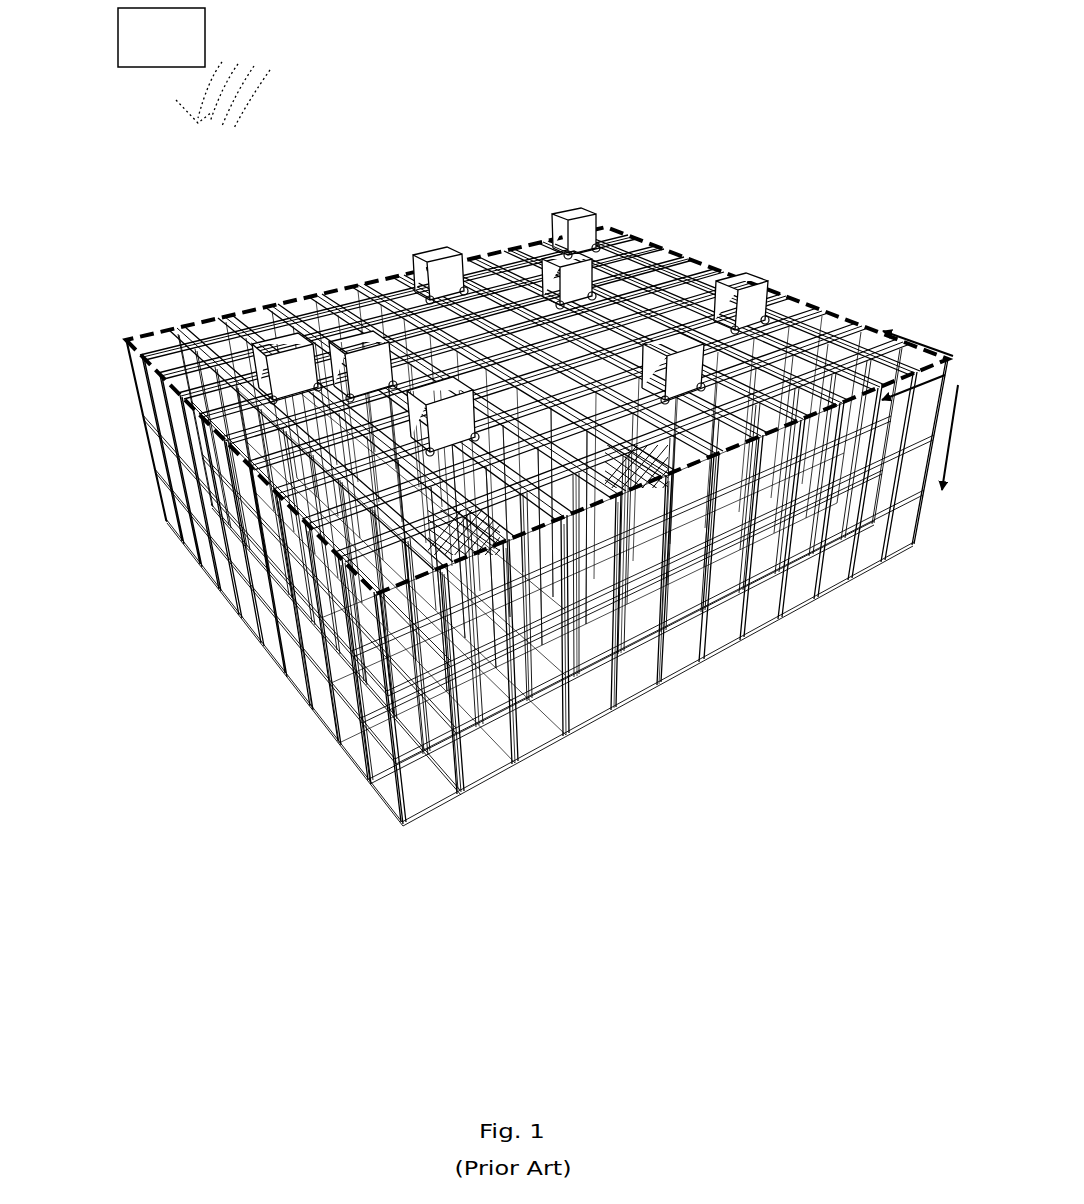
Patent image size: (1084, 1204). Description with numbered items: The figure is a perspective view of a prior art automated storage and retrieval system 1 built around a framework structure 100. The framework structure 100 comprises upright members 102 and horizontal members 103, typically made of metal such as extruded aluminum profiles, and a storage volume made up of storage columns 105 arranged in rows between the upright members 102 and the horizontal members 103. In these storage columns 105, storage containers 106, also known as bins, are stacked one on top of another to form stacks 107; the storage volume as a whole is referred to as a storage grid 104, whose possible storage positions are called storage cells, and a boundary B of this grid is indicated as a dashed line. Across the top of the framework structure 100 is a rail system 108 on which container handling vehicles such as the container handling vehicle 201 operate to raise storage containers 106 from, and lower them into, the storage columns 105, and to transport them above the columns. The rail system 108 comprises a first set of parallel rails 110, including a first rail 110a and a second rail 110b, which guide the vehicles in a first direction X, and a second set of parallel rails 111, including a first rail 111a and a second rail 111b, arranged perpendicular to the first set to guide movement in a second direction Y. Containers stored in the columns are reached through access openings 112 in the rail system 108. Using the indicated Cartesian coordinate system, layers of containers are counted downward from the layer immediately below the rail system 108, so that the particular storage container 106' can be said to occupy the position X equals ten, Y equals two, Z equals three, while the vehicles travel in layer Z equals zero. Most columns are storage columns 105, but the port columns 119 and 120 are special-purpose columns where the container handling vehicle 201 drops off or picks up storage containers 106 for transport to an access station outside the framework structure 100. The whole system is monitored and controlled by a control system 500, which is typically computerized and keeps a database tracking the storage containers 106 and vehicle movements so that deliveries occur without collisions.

The automated storage and retrieval system 1 is at (478, 135).
The control system 500 is at (194, 68).
The framework structure 100 is at (140, 497).
The upright members 102 is at (387, 702).
The horizontal members 103 is at (743, 548).
The storage grid 104 is at (115, 334).
The storage column 105 is at (300, 603).
The storage container 106 is at (627, 656).
The storage container at particular position 106' is at (605, 578).
The stack 107 is at (822, 585).
The rail system 108 is at (873, 332).
The first set of parallel rails 110 is at (820, 357).
The first rail in first direction 110a is at (260, 312).
The second rail in first direction 110b is at (272, 313).
The second set of parallel rails 111 is at (383, 283).
The first rail of second direction 111a is at (225, 318).
The second rail of second direction 111b is at (290, 305).
The access opening 112 is at (775, 337).
The first port column 119 is at (497, 550).
The second port column 120 is at (650, 480).
The container handling vehicle 201 is at (598, 220).
The boundary B is at (175, 392).